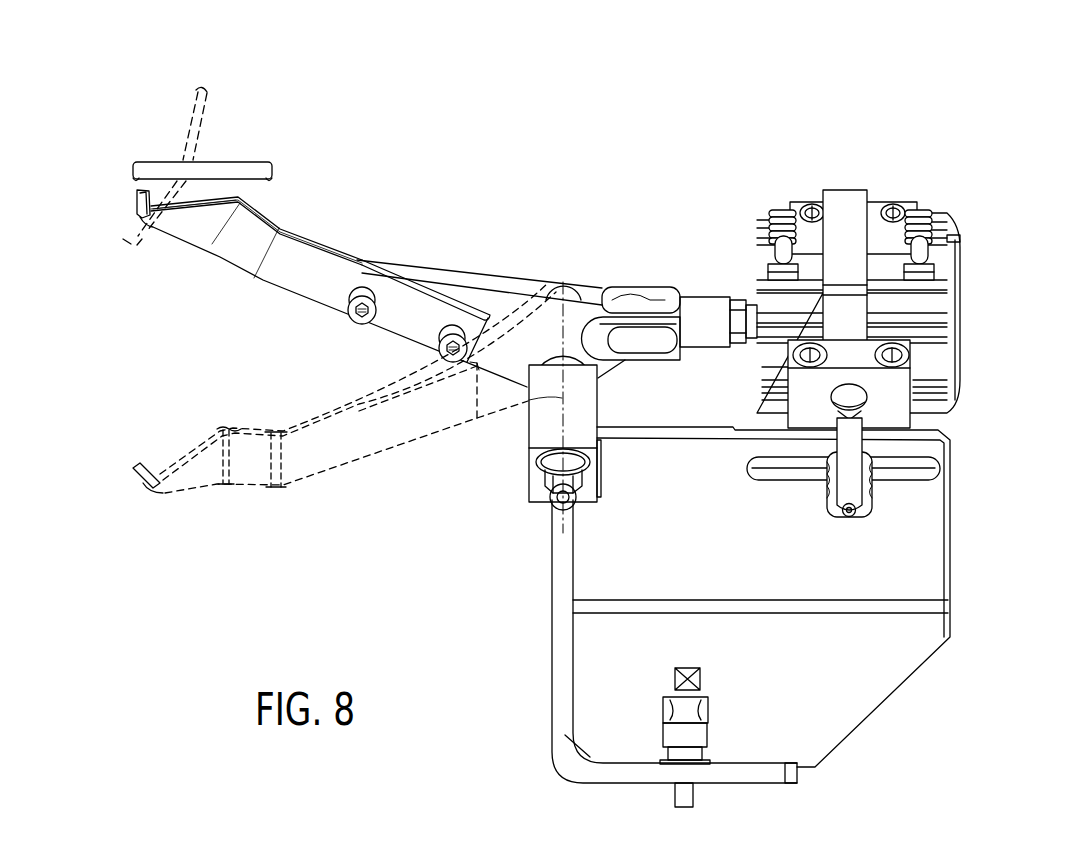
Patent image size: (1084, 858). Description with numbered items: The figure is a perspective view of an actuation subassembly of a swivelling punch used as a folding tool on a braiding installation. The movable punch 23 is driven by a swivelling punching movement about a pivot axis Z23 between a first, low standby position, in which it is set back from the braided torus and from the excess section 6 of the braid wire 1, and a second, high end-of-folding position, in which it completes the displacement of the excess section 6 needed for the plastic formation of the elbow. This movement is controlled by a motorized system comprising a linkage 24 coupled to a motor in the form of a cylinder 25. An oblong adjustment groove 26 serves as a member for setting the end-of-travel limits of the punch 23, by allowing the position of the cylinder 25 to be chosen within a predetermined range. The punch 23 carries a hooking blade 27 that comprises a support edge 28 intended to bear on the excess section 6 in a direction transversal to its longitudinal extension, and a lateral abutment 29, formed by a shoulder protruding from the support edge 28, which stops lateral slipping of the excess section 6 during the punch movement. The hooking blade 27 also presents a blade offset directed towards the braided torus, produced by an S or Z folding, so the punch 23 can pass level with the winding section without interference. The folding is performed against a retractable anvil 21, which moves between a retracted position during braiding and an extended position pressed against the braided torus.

The braid wire 1 is at (165, 126).
The excess section 6 is at (196, 87).
The retractable anvil 21 is at (257, 163).
The lateral abutment 29 is at (139, 195).
The hooking blade 27 is at (182, 228).
The support edge 28 is at (202, 205).
The movable punch 23 is at (357, 262).
The linkage 24 is at (633, 279).
The cylinder 25 is at (783, 307).
The oblong adjustment groove 26 is at (900, 468).
The pivot axis Z23 is at (528, 400).